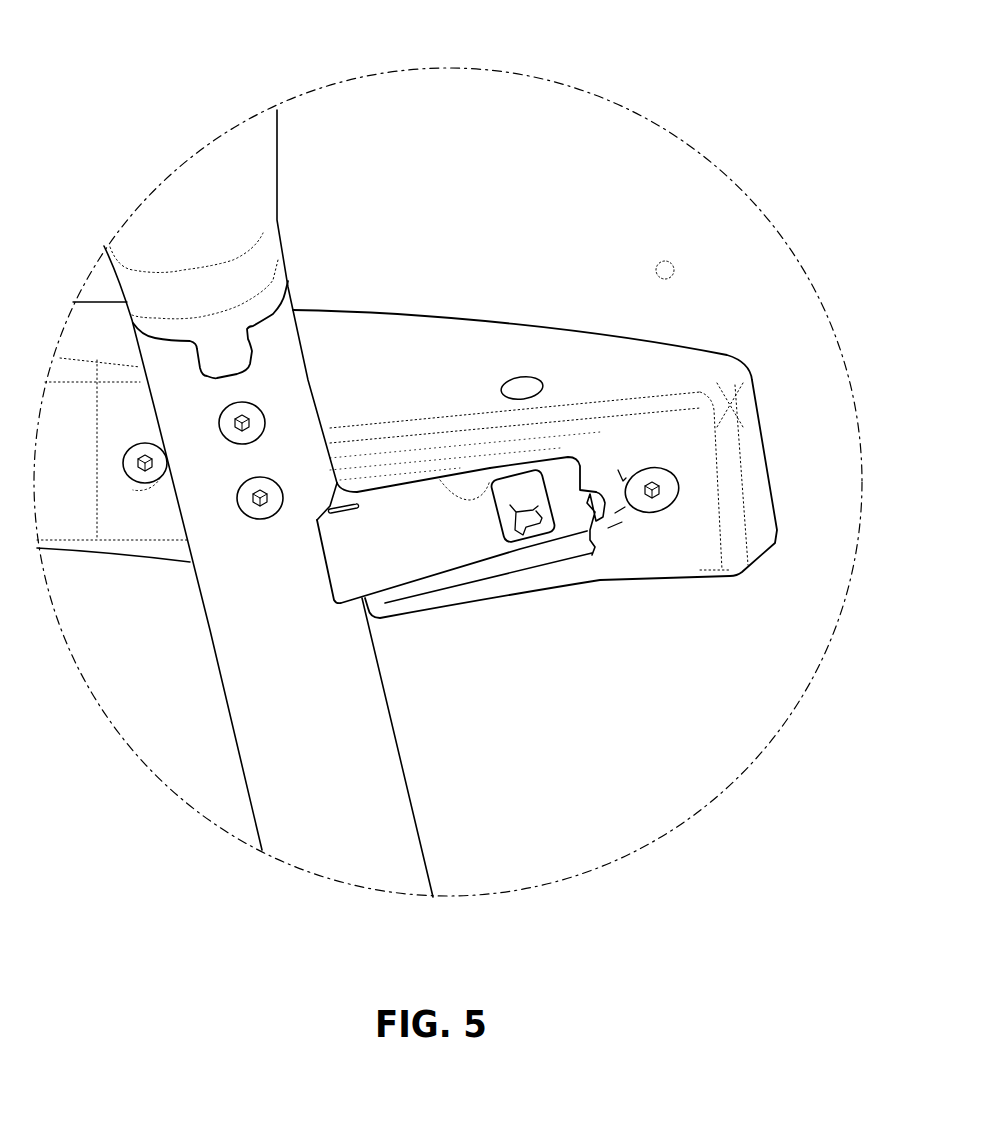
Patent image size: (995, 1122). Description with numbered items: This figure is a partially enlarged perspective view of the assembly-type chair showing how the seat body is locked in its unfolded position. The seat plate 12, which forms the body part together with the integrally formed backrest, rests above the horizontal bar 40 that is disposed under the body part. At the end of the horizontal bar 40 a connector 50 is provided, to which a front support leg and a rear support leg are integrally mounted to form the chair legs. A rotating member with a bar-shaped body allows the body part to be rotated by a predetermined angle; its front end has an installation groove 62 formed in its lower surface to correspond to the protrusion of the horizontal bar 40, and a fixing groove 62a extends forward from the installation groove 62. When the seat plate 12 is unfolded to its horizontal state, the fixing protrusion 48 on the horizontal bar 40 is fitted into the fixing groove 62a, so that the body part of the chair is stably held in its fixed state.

The seat plate 12 is at (507, 123).
The connector 50 is at (262, 150).
The horizontal bar 40 is at (387, 560).
The fixing protrusion 48 is at (523, 533).
The installation groove 62 is at (470, 497).
The fixing groove 62a is at (607, 523).